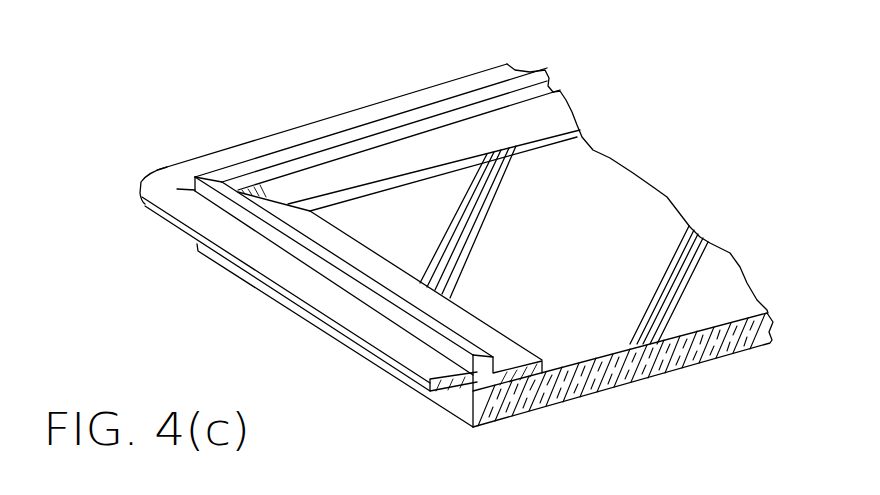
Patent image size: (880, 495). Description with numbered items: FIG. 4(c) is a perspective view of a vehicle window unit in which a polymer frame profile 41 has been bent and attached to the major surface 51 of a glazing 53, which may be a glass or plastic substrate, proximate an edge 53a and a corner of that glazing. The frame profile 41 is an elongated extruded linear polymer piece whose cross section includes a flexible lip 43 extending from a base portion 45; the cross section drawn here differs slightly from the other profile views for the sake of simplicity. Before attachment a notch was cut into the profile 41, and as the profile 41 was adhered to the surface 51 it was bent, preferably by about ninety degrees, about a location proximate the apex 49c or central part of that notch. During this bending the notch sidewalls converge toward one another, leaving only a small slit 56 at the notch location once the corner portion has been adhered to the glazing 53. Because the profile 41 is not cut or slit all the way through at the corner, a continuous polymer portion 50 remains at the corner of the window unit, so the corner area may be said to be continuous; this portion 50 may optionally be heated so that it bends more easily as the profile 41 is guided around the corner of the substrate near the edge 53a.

The frame profile 41 is at (191, 142).
The flexible lip 43 is at (350, 320).
The base portion 45 is at (457, 320).
The apex 49c is at (177, 189).
The continuous polymer portion 50 is at (153, 191).
The major surface 51 is at (720, 268).
The substrate/glazing 53 is at (623, 385).
The edge 53a is at (452, 398).
The slit 56 is at (273, 198).